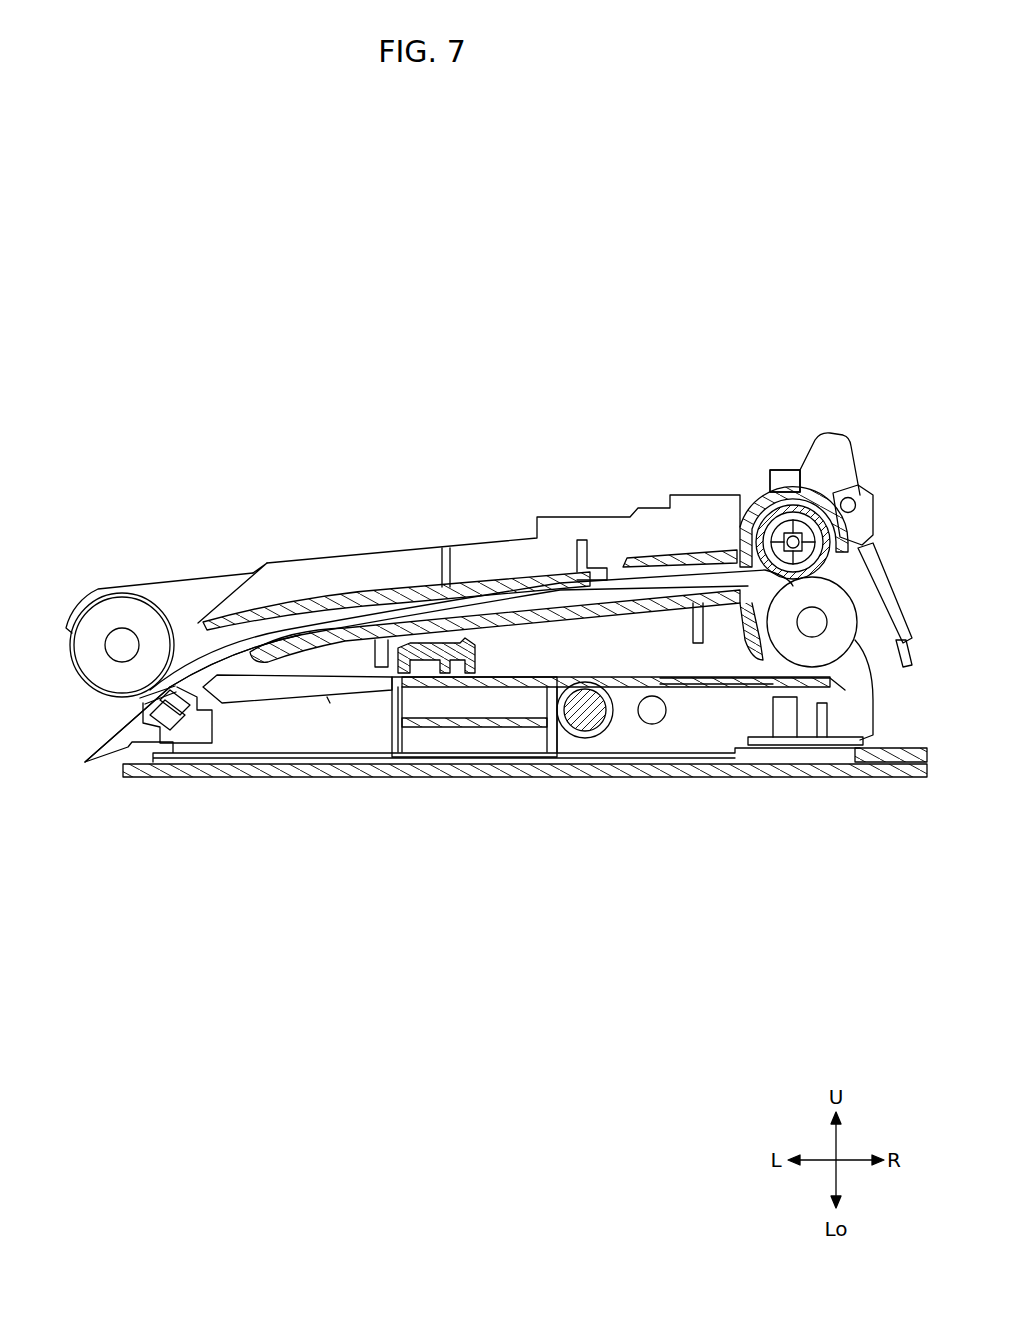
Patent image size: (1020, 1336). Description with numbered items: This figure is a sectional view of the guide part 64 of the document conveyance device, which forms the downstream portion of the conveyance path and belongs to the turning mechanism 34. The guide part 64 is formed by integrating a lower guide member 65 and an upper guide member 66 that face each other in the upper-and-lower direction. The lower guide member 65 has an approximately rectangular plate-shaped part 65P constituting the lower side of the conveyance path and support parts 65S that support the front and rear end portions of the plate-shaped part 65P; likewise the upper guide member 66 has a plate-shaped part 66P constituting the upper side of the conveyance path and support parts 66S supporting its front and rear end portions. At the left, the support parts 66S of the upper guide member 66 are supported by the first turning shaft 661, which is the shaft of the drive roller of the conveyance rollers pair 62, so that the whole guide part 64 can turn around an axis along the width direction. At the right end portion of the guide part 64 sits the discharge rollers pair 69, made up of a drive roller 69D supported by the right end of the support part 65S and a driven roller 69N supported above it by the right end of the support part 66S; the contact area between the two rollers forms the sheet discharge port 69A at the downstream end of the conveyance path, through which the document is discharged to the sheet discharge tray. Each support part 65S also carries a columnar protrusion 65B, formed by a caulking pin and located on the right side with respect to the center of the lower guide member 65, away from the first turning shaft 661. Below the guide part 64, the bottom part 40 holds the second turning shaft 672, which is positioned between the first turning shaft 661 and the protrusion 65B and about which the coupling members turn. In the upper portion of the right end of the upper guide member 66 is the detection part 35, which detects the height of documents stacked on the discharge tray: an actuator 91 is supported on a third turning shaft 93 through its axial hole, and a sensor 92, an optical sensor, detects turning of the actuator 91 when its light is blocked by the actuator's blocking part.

The turning mechanism 34 is at (770, 236).
The detection part 35 is at (843, 368).
The bottom part 40 is at (428, 778).
The conveyance rollers pair 62 is at (100, 688).
The guide part 64 is at (378, 541).
The lower guide member 65 is at (273, 826).
The support part 65S is at (290, 665).
The plate-shaped part 65P is at (337, 648).
The protrusion 65B is at (652, 725).
The upper guide member 66 is at (237, 494).
The support part 66S is at (232, 573).
The plate-shaped part 66P is at (293, 595).
The first turning shaft 661 is at (104, 652).
The second turning shaft 672 is at (587, 735).
The discharge rollers pair 69 is at (780, 666).
The sheet discharge port 69A is at (823, 572).
The drive roller 69D is at (860, 628).
The driven roller 69N is at (771, 512).
The actuator 91 is at (840, 438).
The sensor 92 is at (790, 470).
The third turning shaft 93 is at (862, 503).